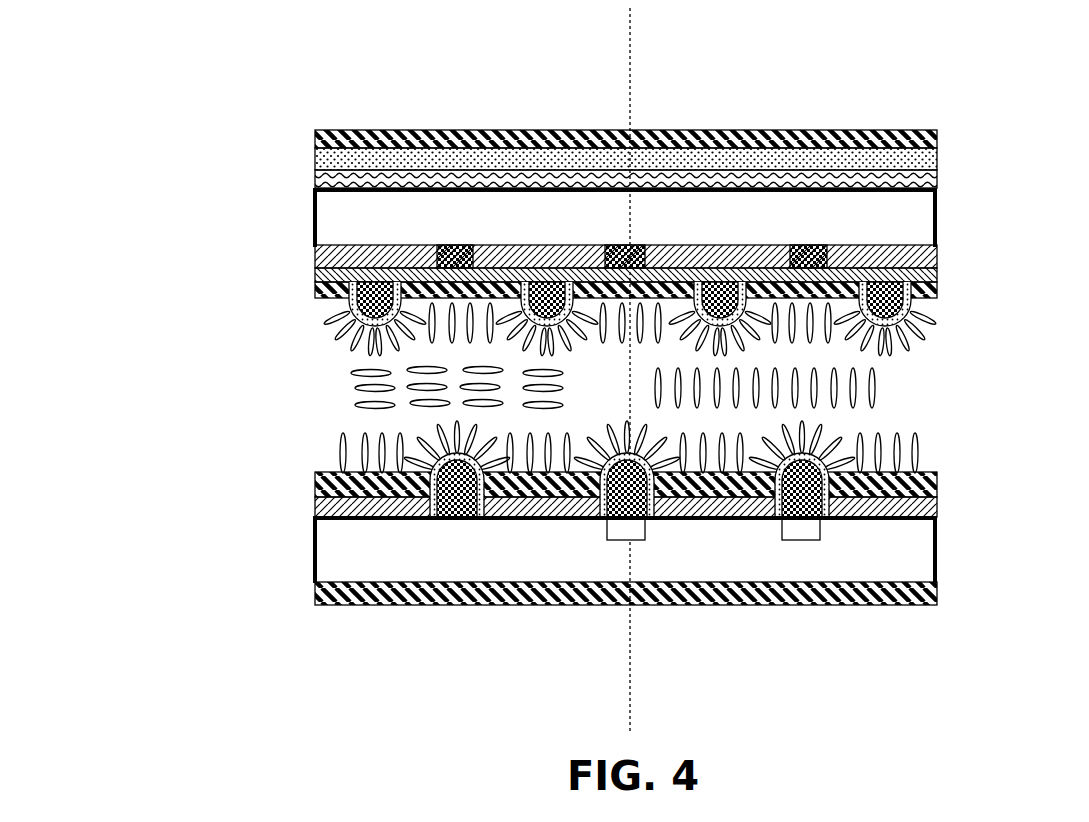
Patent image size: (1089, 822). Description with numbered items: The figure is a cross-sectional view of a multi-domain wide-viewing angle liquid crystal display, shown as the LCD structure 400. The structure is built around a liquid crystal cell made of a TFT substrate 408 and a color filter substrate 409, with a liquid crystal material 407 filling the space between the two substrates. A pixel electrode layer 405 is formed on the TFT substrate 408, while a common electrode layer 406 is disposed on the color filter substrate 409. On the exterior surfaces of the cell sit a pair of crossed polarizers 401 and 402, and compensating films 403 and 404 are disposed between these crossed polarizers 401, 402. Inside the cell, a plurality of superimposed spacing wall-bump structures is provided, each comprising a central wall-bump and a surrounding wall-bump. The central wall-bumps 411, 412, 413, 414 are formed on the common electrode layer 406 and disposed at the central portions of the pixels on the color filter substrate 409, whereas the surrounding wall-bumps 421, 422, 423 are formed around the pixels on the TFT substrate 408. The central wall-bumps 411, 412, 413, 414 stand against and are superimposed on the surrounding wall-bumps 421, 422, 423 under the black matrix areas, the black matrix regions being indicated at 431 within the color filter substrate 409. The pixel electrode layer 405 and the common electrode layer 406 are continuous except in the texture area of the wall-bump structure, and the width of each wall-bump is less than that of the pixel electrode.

The LCD structure 400 is at (358, 0).
The crossed polarizer 401 is at (937, 598).
The crossed polarizer 402 is at (937, 132).
The compensating film 403 is at (937, 160).
The compensating film 404 is at (937, 187).
The pixel electrode layer 405 is at (937, 507).
The common electrode layer 406 is at (937, 290).
The liquid crystal material 407 is at (860, 422).
The TFT substrate 408 is at (897, 558).
The color filter substrate 409 is at (937, 265).
The central wall-bump 411 is at (353, 312).
The central wall-bump 412 is at (525, 312).
The central wall-bump 413 is at (745, 327).
The central wall-bump 414 is at (913, 313).
The surrounding wall-bump 421 is at (433, 463).
The surrounding wall-bump 422 is at (597, 502).
The surrounding wall-bump 423 is at (917, 477).
The black matrix 431 is at (1015, 228).